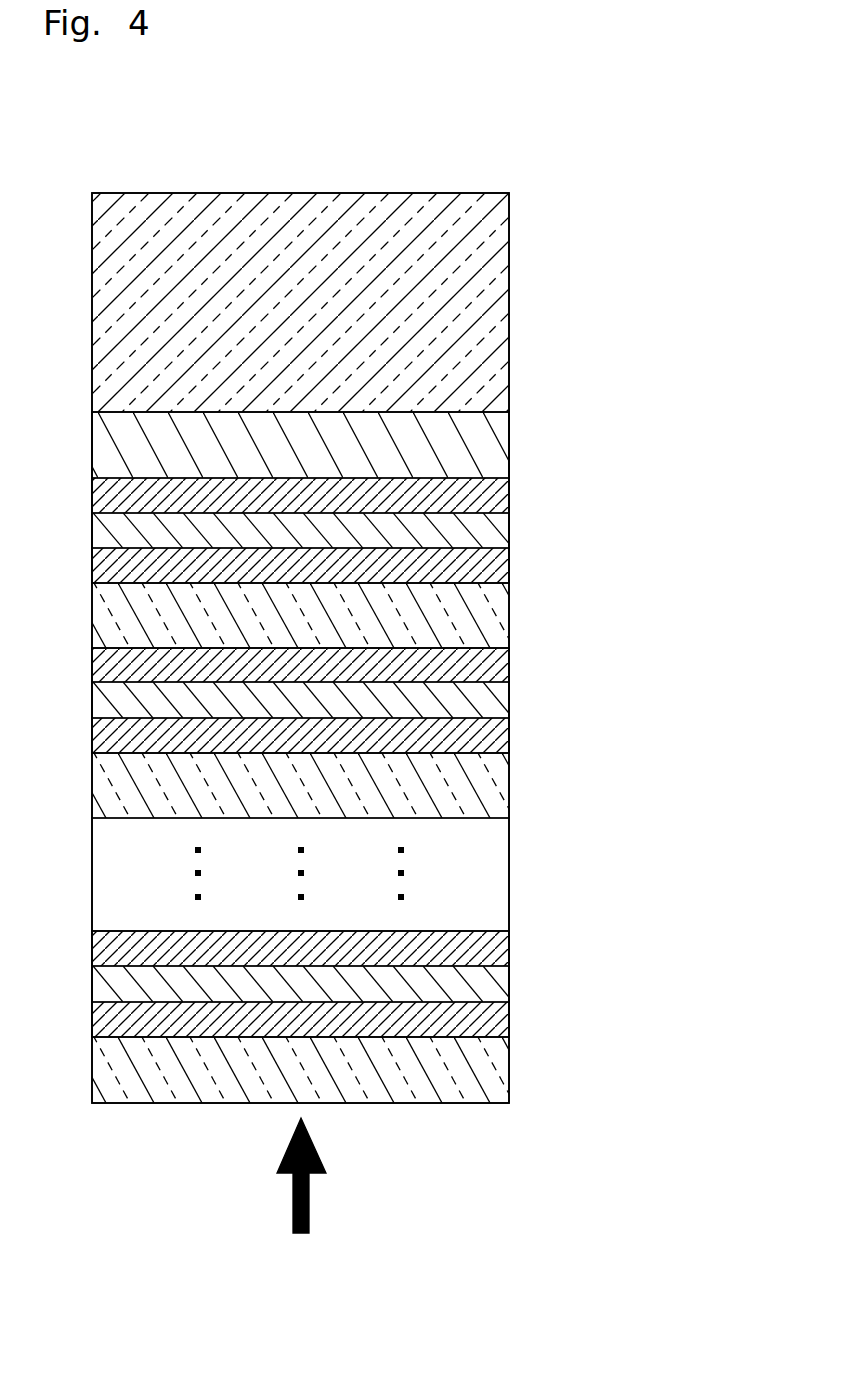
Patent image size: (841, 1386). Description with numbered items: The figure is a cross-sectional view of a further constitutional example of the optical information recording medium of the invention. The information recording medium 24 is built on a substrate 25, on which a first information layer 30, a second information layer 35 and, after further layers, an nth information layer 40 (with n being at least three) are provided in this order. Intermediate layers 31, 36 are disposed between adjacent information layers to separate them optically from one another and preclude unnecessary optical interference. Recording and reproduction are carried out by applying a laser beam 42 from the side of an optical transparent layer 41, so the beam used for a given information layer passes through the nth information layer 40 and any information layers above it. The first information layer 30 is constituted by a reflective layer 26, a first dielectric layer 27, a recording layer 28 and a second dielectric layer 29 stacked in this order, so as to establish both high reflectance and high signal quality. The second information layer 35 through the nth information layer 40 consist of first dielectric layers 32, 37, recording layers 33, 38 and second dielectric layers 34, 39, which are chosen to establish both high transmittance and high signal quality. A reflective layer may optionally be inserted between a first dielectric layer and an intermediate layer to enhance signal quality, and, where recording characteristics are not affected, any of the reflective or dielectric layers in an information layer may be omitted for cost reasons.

The information recording medium 24 is at (540, 180).
The substrate 25 is at (488, 300).
The reflective layer 26 is at (488, 445).
The first dielectric layer 27 is at (488, 500).
The recording layer 28 is at (488, 535).
The second dielectric layer 29 is at (488, 571).
The first information layer 30 is at (623, 395).
The intermediate layer 31 is at (488, 623).
The first dielectric layer 32 is at (488, 671).
The recording layer 33 is at (488, 706).
The second dielectric layer 34 is at (488, 741).
The second information layer 35 is at (623, 642).
The intermediate layer 36 is at (488, 795).
The first dielectric layer 37 is at (488, 955).
The recording layer 38 is at (488, 990).
The second dielectric layer 39 is at (488, 1025).
The nth information layer 40 is at (623, 925).
The optical transparent layer 41 is at (488, 1080).
The laser beam 42 is at (308, 1206).